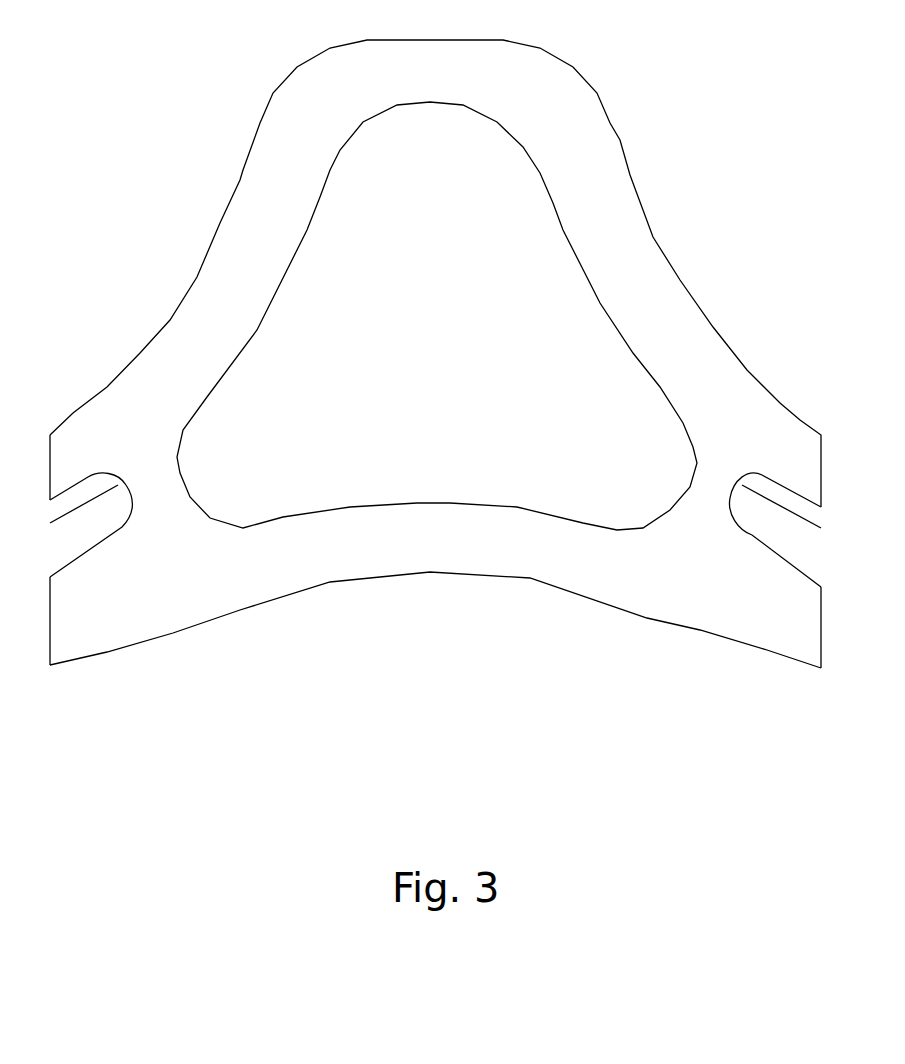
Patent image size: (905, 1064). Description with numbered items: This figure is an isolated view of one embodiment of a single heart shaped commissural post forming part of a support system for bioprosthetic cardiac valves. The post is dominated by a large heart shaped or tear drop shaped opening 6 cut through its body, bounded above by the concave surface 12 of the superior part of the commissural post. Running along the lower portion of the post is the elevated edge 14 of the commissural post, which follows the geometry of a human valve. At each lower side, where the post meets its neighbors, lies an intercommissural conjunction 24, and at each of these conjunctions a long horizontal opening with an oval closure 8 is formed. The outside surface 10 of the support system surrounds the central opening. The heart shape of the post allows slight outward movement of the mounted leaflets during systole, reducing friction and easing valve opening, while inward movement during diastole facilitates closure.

The heart shaped or tear drop shaped opening 6 is at (437, 316).
The long horizontal opening with oval closure 8 is at (435, 531).
The outside surface of the support system 10 is at (152, 489).
The concave surface of the superior part of the commissural post 12 is at (435, 273).
The elevated edge of the commissural post 14 is at (550, 598).
The intercommissural conjunction 24 is at (435, 608).